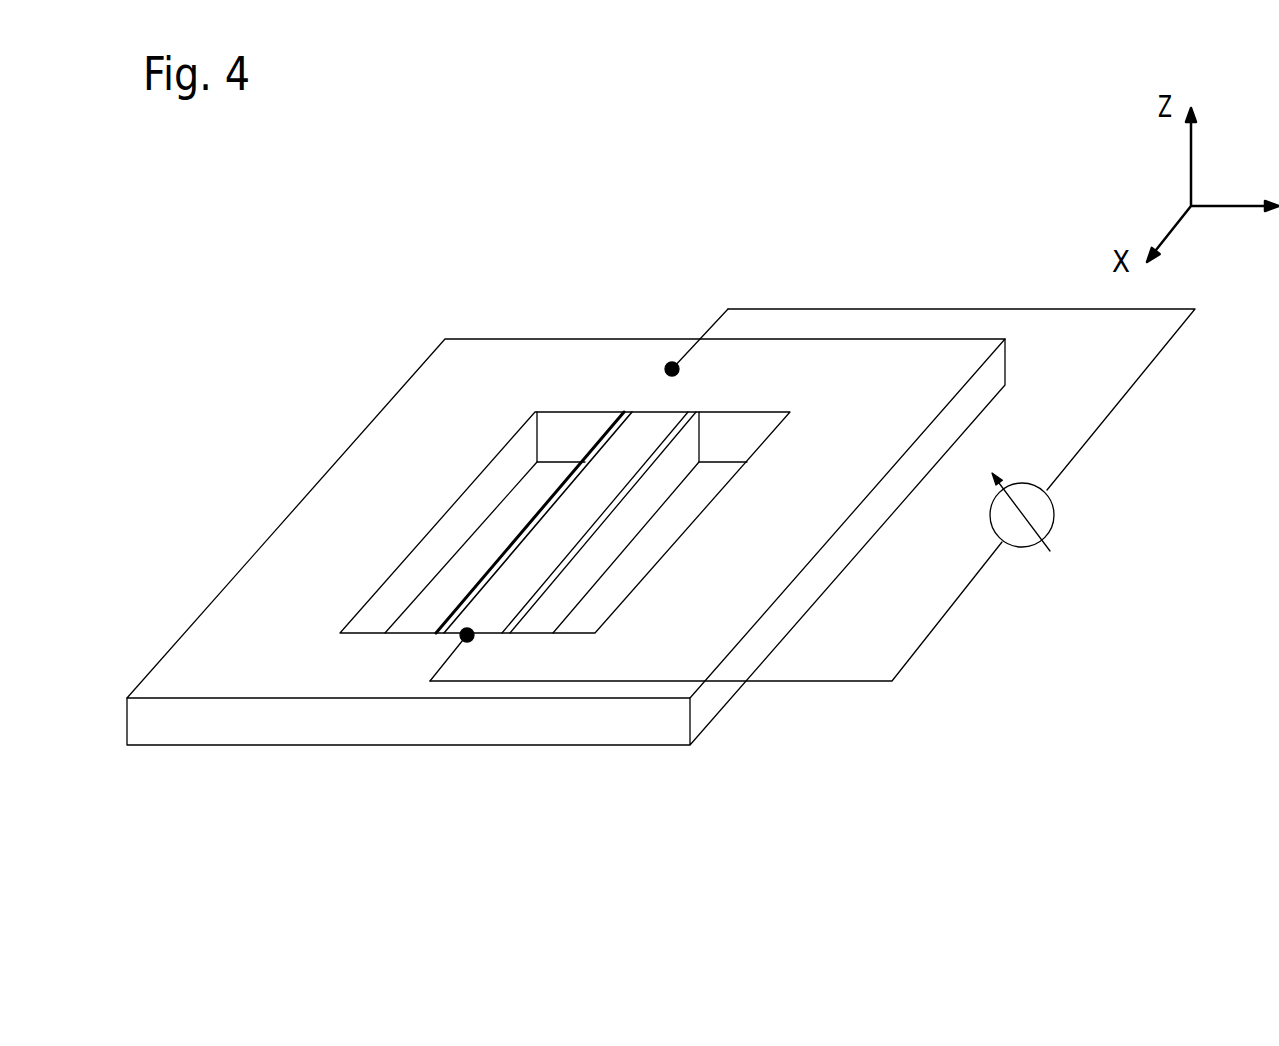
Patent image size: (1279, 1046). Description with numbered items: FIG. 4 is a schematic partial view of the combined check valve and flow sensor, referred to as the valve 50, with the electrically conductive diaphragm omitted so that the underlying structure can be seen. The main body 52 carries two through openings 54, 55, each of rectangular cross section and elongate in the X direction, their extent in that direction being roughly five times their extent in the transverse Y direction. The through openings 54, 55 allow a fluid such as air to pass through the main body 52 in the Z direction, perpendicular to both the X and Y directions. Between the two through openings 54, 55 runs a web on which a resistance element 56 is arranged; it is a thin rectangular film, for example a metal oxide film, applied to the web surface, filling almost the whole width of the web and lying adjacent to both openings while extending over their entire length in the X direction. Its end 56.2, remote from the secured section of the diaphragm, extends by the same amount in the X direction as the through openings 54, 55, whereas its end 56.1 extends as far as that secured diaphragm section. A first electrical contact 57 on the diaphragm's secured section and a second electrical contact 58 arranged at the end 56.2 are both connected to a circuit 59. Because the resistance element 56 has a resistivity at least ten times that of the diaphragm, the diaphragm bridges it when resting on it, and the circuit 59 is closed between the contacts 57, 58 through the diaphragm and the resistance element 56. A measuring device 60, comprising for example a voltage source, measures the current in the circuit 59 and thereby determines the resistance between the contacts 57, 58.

The valve 50 is at (577, 196).
The main body 52 is at (242, 671).
The through opening 54 is at (383, 624).
The through opening 55 is at (541, 623).
The resistance element 56 is at (588, 528).
The end of the resistance element 56.1 is at (686, 395).
The end of the resistance element 56.2 is at (432, 656).
The first electrical contact 57 is at (672, 369).
The second electrical contact 58 is at (463, 632).
The circuit 59 is at (902, 668).
The measuring device 60 is at (1082, 495).